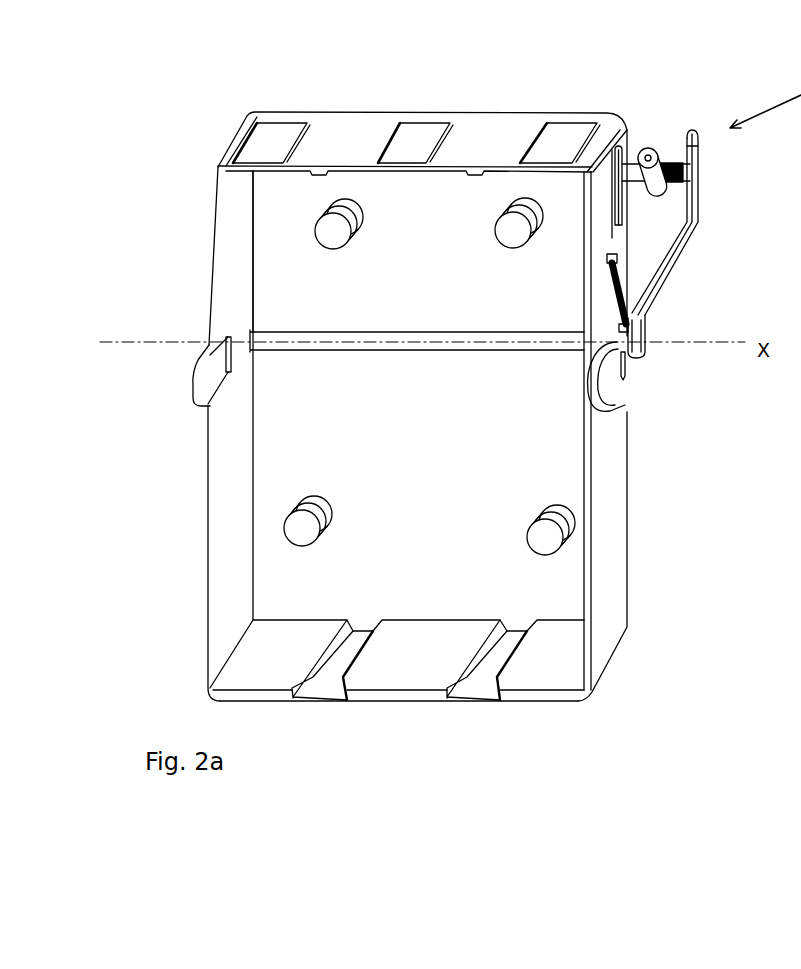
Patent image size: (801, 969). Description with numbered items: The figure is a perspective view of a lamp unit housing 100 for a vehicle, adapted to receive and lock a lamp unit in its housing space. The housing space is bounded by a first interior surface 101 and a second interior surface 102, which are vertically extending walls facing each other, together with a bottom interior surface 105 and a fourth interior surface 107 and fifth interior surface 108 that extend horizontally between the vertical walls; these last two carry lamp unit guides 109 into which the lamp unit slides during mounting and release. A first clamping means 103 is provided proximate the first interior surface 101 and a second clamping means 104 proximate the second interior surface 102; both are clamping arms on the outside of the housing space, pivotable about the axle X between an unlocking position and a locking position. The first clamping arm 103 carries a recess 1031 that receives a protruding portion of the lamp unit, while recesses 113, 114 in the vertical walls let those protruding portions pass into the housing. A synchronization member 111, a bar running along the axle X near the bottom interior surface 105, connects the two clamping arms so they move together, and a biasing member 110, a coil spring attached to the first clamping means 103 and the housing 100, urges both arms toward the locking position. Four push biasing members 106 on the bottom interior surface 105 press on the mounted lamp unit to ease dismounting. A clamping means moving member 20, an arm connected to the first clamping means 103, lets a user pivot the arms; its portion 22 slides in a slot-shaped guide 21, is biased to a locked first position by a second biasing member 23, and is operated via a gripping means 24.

The lamp unit housing 100 is at (641, 90).
The clamping means moving member 20 is at (711, 238).
The guide 21 is at (613, 217).
The portion 22 is at (623, 167).
The second biasing member 23 is at (680, 167).
The gripping means 24 is at (660, 160).
The biasing member 110 is at (647, 307).
The first clamping means 103 is at (664, 379).
The recess 1031 is at (623, 368).
The first interior surface 101 is at (561, 464).
The second interior surface 102 is at (252, 501).
The second clamping means 104 is at (188, 357).
The bottom interior surface 105 is at (338, 460).
The push biasing member 106 is at (550, 528).
The fourth interior surface 107 is at (415, 657).
The fifth interior surface 108 is at (439, 191).
The lamp unit guide 109 is at (315, 179).
The synchronization member 111 is at (413, 340).
The recess 113 is at (570, 376).
The recess 114 is at (242, 374).